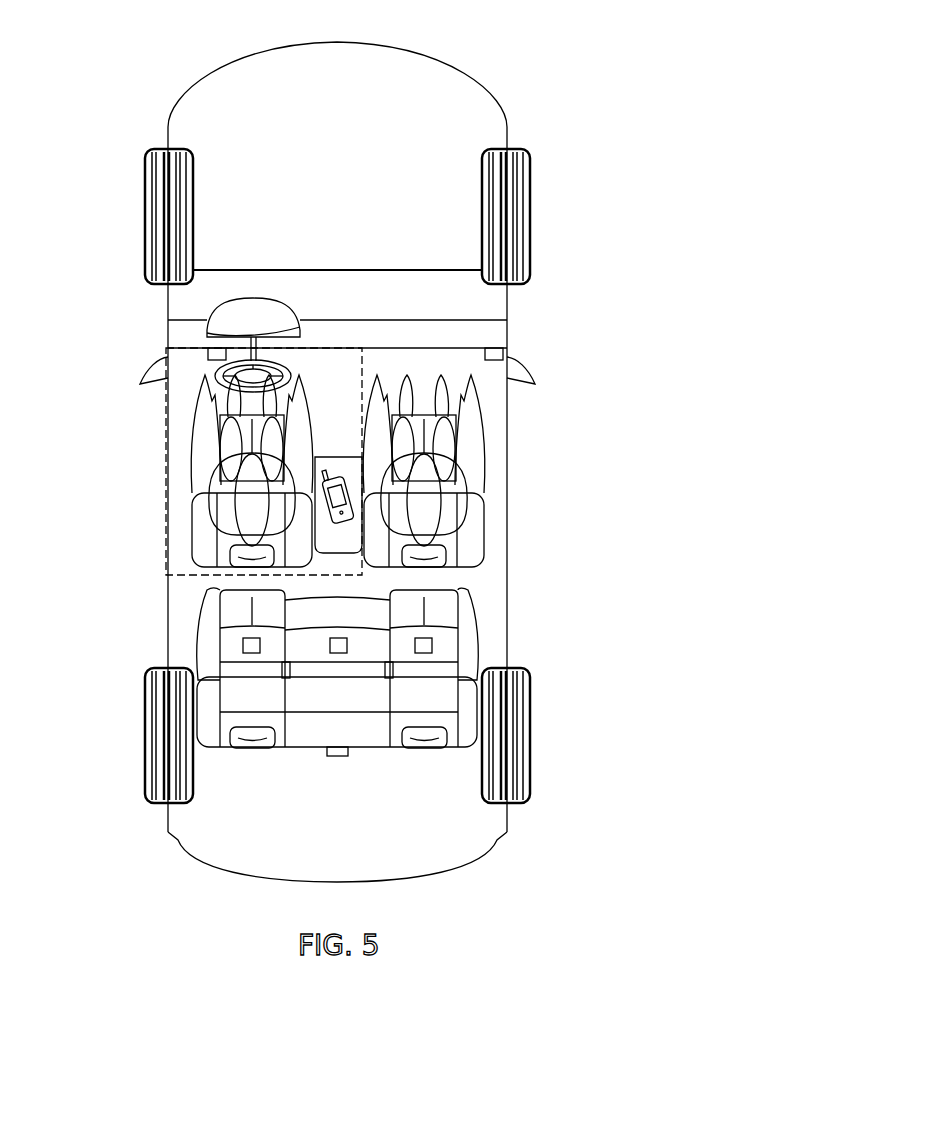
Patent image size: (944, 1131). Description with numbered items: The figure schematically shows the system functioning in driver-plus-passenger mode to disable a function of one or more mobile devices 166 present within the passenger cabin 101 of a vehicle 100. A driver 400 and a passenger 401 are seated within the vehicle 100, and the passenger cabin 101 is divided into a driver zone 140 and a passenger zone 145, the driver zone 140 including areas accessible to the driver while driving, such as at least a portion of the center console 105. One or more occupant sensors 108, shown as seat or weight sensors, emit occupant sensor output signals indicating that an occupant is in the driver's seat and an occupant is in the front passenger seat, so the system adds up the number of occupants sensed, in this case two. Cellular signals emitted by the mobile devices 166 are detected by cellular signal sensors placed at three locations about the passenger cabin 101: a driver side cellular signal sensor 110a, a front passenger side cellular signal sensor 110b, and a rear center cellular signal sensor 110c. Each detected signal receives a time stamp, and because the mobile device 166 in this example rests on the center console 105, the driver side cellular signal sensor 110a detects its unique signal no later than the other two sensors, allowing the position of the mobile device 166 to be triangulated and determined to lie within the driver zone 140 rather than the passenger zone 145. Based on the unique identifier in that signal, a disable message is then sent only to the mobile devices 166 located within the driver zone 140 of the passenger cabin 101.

The vehicle 100 is at (504, 58).
The passenger cabin 101 is at (115, 372).
The driver side cellular signal sensor 110a is at (208, 353).
The front passenger side cellular signal sensor 110b is at (503, 355).
The rear center cellular signal sensor 110c is at (338, 757).
The driver zone 140 is at (220, 461).
The passenger zone 145 is at (467, 471).
The driver 400 is at (203, 513).
The passenger 401 is at (472, 513).
The occupant sensors 108 is at (243, 638).
The center console 105 is at (333, 553).
The mobile devices 166 is at (352, 522).